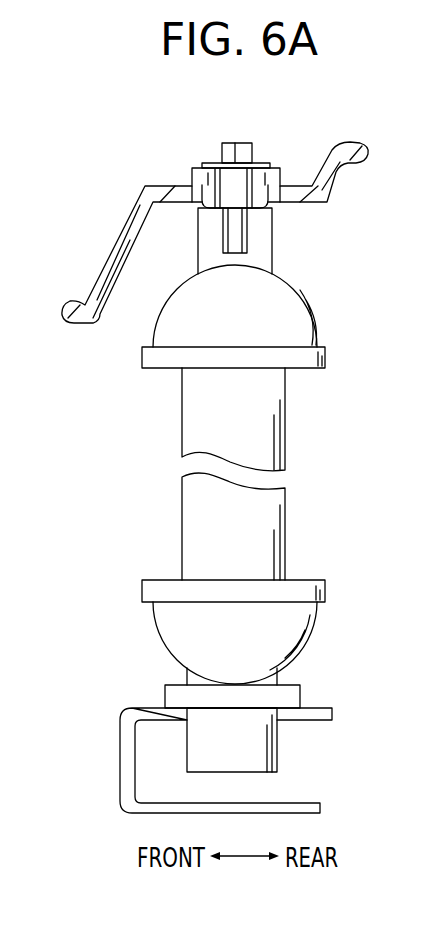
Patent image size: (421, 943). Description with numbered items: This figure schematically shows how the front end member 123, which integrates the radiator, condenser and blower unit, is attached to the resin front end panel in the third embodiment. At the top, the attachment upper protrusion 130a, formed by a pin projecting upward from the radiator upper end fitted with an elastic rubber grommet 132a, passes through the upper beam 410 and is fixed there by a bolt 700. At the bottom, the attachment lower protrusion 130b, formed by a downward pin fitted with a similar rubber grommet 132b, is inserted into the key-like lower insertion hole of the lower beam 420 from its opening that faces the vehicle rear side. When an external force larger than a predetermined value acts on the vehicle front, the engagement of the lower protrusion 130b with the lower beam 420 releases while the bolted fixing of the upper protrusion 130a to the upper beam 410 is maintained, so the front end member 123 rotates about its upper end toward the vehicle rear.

The front end member 123 is at (290, 312).
The attachment upper protrusion 130a is at (188, 165).
The grommet 132a is at (207, 180).
The bolt 700 is at (252, 157).
The upper beam 410 is at (112, 248).
The attachment lower protrusion 130b is at (183, 750).
The grommet 132b is at (258, 742).
The lower beam 420 is at (158, 815).